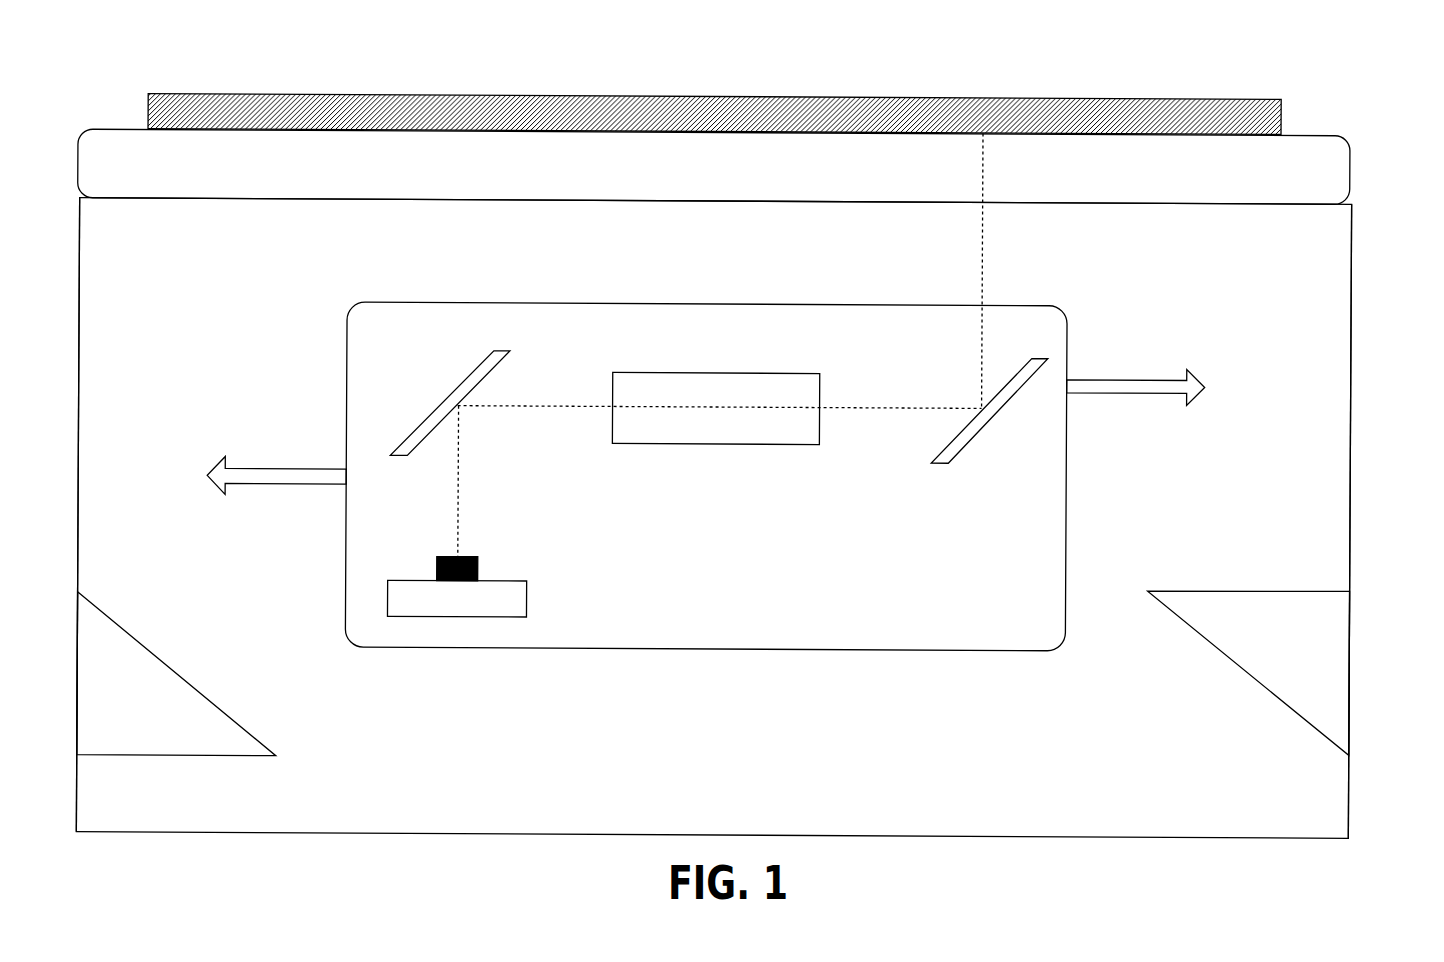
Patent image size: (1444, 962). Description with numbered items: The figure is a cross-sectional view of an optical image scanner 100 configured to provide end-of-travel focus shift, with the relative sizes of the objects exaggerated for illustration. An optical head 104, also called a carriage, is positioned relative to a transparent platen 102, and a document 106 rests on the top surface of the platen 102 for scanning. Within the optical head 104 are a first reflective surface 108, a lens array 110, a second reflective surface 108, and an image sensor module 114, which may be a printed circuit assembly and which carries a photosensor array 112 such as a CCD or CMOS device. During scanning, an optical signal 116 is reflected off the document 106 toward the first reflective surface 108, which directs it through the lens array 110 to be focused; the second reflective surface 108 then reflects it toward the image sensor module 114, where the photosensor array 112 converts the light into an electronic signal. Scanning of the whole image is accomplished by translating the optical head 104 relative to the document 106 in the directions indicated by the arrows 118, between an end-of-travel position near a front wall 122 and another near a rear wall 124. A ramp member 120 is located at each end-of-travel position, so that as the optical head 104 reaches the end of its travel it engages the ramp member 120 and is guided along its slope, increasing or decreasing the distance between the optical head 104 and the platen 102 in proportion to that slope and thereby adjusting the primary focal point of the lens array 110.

The optical image scanner 100 is at (1281, 73).
The transparent platen 102 is at (1348, 169).
The optical head 104 is at (1066, 480).
The document 106 is at (1107, 96).
The reflective surface 108 is at (427, 417).
The lens array 110 is at (760, 444).
The photosensor array 112 is at (478, 569).
The image sensor module 114 is at (570, 600).
The optical signal 116 is at (946, 245).
The direction of translation 118 is at (284, 471).
The ramp member 120 is at (126, 633).
The front wall 122 is at (77, 311).
The rear wall 124 is at (1350, 453).